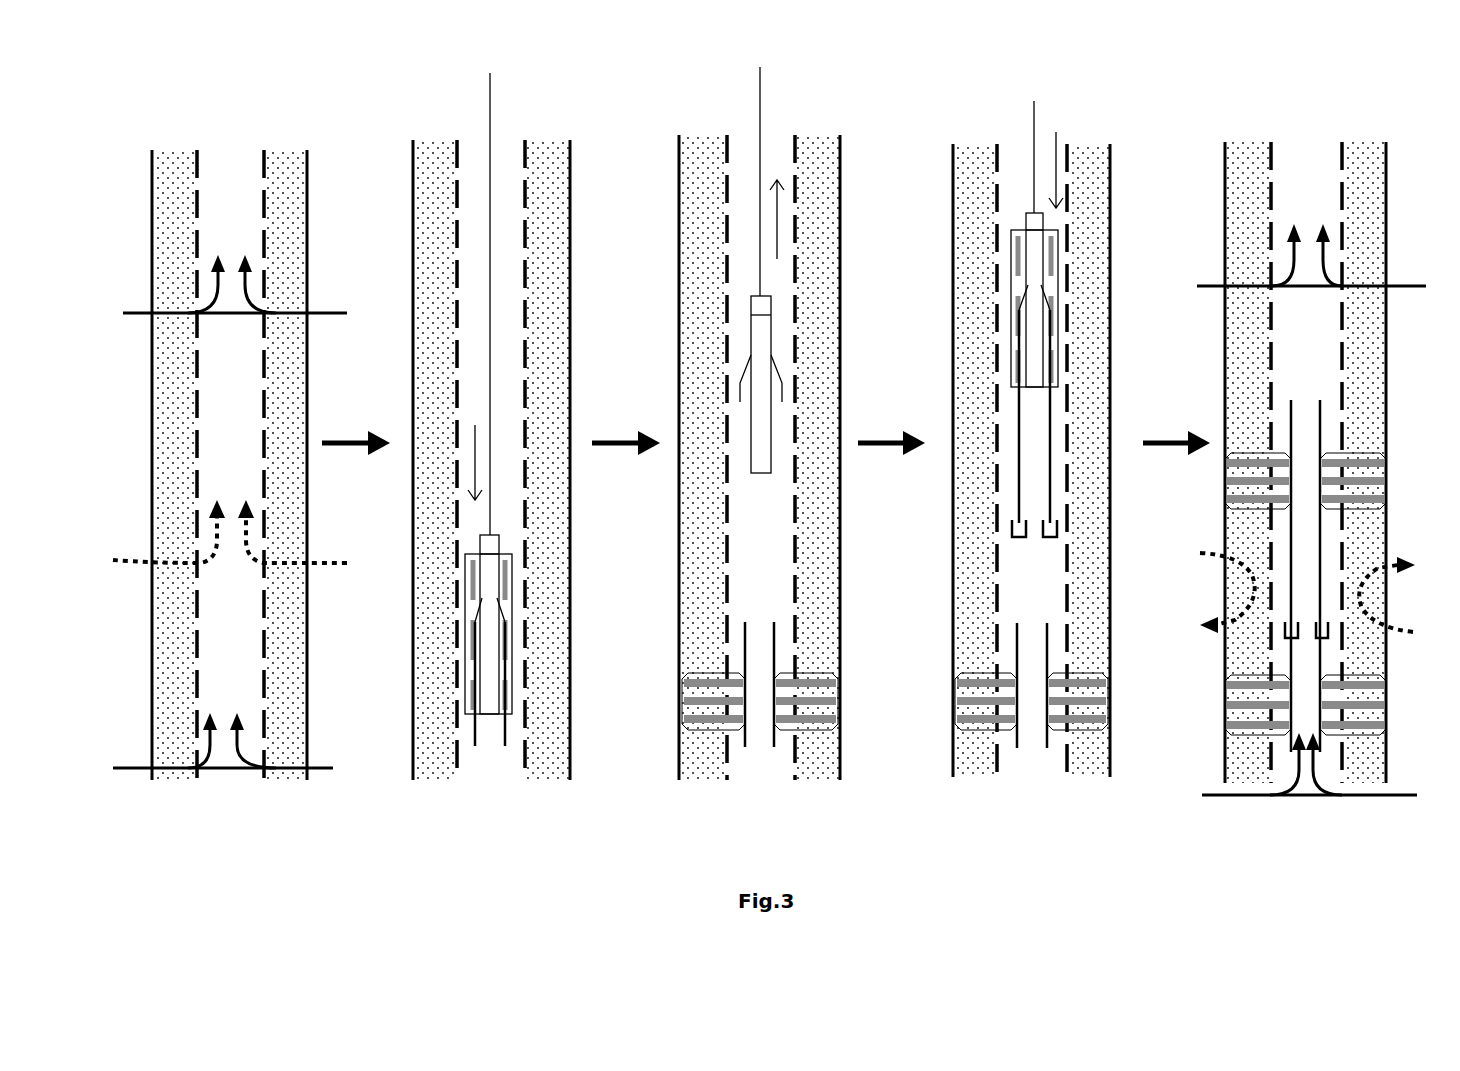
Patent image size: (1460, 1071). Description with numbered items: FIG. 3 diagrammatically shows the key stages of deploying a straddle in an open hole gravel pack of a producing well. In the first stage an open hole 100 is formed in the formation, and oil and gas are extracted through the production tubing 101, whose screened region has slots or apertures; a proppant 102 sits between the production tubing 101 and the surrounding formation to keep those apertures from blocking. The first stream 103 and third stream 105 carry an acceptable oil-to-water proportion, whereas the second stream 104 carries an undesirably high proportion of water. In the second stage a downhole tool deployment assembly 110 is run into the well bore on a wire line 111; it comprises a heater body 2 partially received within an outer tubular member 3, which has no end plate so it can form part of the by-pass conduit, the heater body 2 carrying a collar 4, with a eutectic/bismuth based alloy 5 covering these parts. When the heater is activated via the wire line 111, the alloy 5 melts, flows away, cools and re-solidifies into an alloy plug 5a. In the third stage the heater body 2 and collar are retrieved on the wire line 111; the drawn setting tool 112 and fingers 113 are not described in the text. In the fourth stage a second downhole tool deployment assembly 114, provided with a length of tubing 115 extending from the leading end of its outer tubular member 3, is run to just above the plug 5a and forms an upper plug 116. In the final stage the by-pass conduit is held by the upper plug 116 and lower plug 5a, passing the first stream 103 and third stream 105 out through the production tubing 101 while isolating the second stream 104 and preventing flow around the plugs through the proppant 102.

The open hole 100 is at (152, 247).
The production tubing 101 is at (260, 212).
The proppant 102 is at (182, 205).
The first stream 103 is at (125, 316).
The second stream 104 is at (125, 560).
The third stream 105 is at (117, 771).
The downhole tool deployment assembly 110 is at (498, 778).
The wire line 111 is at (490, 132).
The setting tool 112 is at (762, 335).
The release fingers 113 is at (776, 368).
The second downhole tool deployment assembly 114 is at (1012, 205).
The length of tubing 115 is at (1050, 423).
The plug 116 is at (1368, 472).
The heater body 2 is at (490, 562).
The outer tubular member 3 is at (505, 684).
The collar 4 is at (510, 618).
The eutectic/bismuth based alloy 5 is at (505, 575).
The alloy plug 5a is at (705, 688).